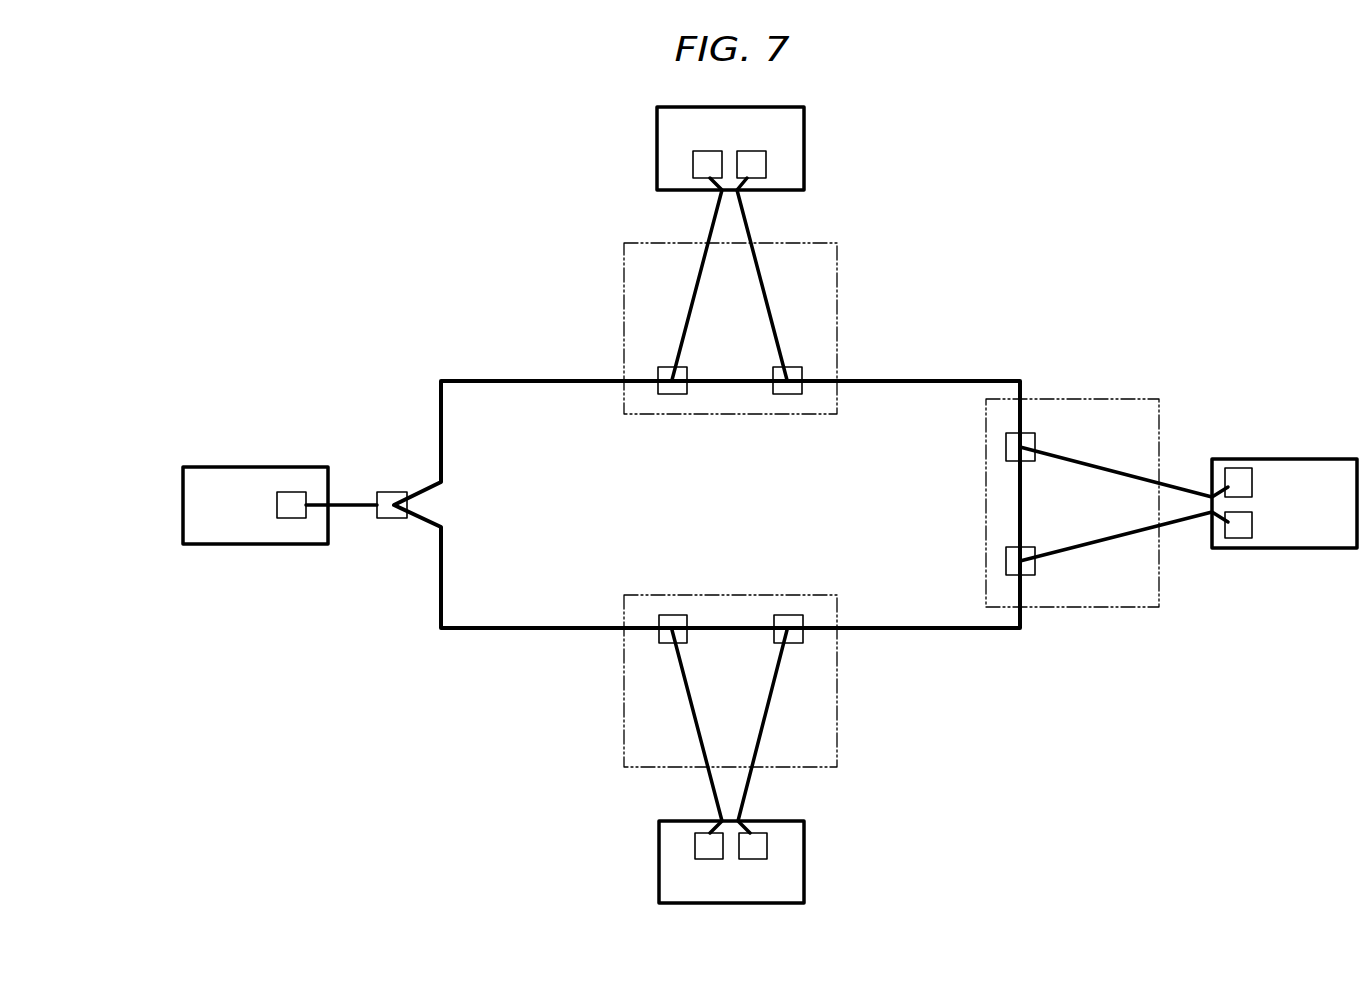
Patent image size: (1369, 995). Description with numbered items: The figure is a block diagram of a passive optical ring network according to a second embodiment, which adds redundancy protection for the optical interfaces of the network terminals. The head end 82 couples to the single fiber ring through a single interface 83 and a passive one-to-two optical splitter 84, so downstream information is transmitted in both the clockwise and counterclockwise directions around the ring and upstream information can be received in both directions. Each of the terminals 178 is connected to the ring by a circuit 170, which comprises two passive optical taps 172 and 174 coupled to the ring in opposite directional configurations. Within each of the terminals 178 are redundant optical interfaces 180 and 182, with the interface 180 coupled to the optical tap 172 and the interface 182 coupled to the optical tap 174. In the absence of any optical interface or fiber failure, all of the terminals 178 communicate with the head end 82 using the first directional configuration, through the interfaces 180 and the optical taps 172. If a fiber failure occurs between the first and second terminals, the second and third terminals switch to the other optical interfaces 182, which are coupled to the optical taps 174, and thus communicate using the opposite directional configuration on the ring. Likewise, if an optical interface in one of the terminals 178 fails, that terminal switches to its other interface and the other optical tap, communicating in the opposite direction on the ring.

The head end 82 is at (250, 466).
The interface 83 is at (292, 519).
The coupler 84 is at (392, 491).
The circuit 170 is at (623, 309).
The passive optical tap 172 is at (672, 395).
The passive optical tap 174 is at (787, 395).
The terminal 178 is at (805, 128).
The optical interface 180 is at (692, 165).
The optical interface 182 is at (767, 165).